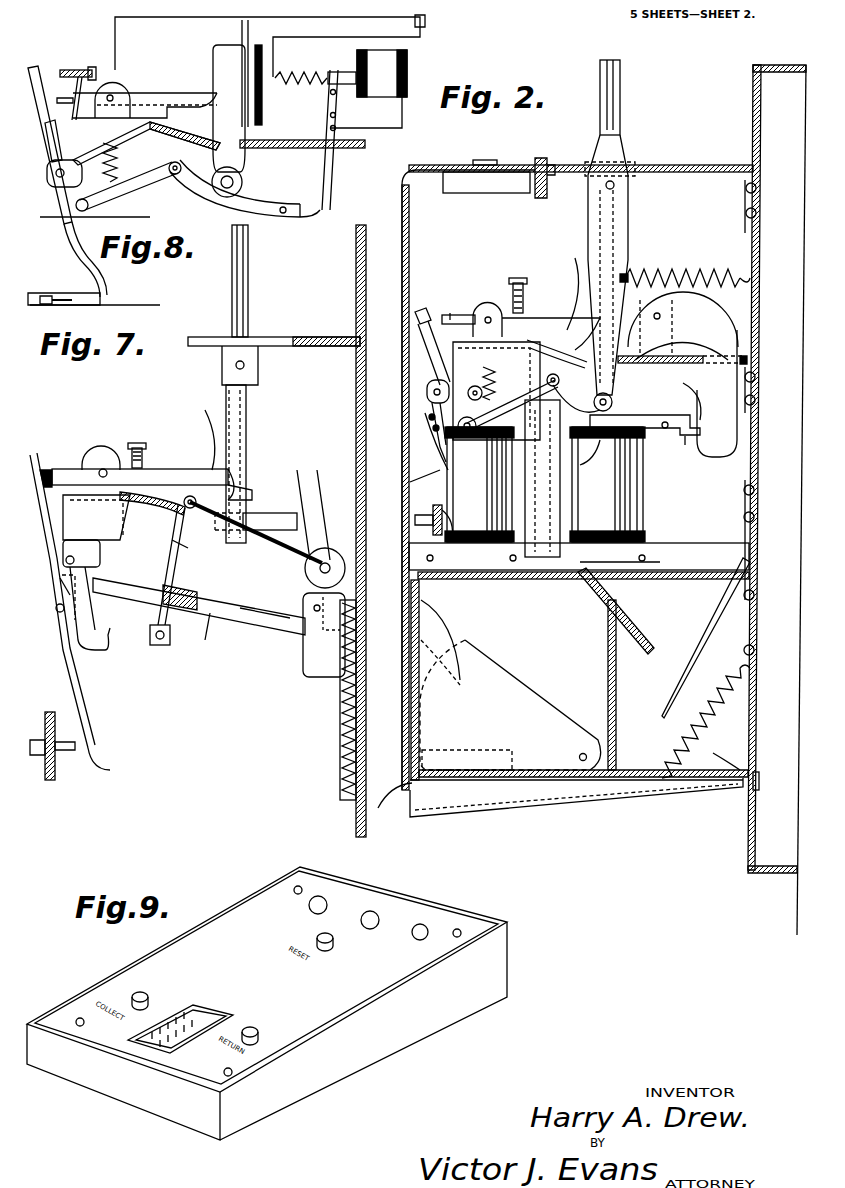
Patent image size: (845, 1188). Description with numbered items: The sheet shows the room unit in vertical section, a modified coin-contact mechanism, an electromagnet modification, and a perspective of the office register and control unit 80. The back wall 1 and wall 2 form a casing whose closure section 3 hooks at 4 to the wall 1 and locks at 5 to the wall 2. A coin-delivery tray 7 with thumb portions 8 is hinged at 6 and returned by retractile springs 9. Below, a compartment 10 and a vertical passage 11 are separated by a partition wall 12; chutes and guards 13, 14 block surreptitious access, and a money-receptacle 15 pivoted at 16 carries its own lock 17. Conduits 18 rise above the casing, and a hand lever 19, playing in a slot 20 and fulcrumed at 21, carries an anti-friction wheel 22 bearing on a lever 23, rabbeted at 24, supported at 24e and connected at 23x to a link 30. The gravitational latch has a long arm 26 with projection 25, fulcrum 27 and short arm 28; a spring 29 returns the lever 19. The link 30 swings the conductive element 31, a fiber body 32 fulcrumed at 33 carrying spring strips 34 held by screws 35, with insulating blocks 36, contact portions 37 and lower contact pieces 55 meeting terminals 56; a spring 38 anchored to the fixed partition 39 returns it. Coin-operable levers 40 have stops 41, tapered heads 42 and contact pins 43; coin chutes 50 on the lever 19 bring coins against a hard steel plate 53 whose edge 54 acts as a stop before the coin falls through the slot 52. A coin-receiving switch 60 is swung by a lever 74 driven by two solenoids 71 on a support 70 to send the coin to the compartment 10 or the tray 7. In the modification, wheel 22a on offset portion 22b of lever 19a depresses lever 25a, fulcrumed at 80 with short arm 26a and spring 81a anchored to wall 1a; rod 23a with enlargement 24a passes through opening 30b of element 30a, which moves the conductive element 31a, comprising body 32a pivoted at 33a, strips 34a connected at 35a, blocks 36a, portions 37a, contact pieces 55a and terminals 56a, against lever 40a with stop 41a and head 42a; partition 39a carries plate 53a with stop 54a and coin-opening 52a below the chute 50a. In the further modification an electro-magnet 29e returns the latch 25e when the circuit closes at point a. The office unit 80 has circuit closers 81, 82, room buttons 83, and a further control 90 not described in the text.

In FIG. 2, the back wall 1 is at (760, 262).
In FIG. 7, the casing wall 1a is at (366, 275).
In FIG. 2, the wall 2 is at (705, 165).
In FIG. 2, the closure section 3 is at (438, 440).
In FIG. 2, the hooked connection 4 is at (765, 779).
In FIG. 2, the lock 5 is at (500, 180).
In FIG. 2, the hinge 6 is at (724, 754).
In FIG. 8, the coin-delivery tray 7 is at (262, 110).
In FIG. 2, the coin-delivery tray 7 is at (550, 800).
In FIG. 2, the thumb portions 8 is at (395, 799).
In FIG. 2, the retractile springs 9 is at (690, 738).
In FIG. 2, the compartment 10 is at (474, 642).
In FIG. 2, the vertical passage 11 is at (633, 585).
In FIG. 2, the transverse partition wall 12 is at (616, 690).
In FIG. 2, the combined chute and guard 13 is at (630, 625).
In FIG. 2, the combined chute and guard 14 is at (705, 632).
In FIG. 2, the money-receptacle 15 is at (525, 700).
In FIG. 2, the pivot 16 is at (578, 755).
In FIG. 2, the individual lock 17 is at (495, 750).
In FIG. 7, the upright-receiving conduits 18 is at (248, 280).
In FIG. 2, the upright-receiving conduits 18 is at (620, 80).
In FIG. 2, the hand lever 19 is at (613, 104).
In FIG. 7, the lever 19a is at (258, 368).
In FIG. 7, the slot 20 is at (255, 336).
In FIG. 2, the slot 20 is at (625, 170).
In FIG. 2, the fulcrum 21 is at (612, 181).
In FIG. 2, the anti-friction wheel 22 is at (612, 405).
In FIG. 7, the anti-friction wheel 22a is at (275, 590).
In FIG. 7, the offset portion 22b is at (297, 495).
In FIG. 2, the vertically swinging lever 23 is at (650, 415).
In FIG. 7, the rod 23a is at (190, 543).
In FIG. 2, the pivotal connection 23x is at (593, 452).
In FIG. 2, the rabbet 24 is at (684, 452).
In FIG. 7, the enlargement 24a is at (150, 628).
In FIG. 2, the pivotal support 24e is at (665, 428).
In FIG. 2, the projection 25 is at (684, 392).
In FIG. 7, the vertically swinging lever 25a is at (240, 622).
In FIG. 8, the latch 25e is at (327, 182).
In FIG. 2, the long arm 26 is at (725, 457).
In FIG. 7, the short arm 26a is at (335, 548).
In FIG. 2, the fulcrum 27 is at (660, 316).
In FIG. 2, the short arm 28 is at (630, 288).
In FIG. 2, the retractile spring 29 is at (668, 270).
In FIG. 8, the electro-magnet 29e is at (407, 62).
In FIG. 2, the link 30 is at (498, 410).
In FIG. 7, the vertically swinging element 30a is at (205, 642).
In FIG. 7, the opening 30b is at (186, 565).
In FIG. 2, the swinging conductive element 31 is at (428, 418).
In FIG. 7, the swinging conductive element 31a is at (47, 589).
In FIG. 2, the body 32 is at (425, 350).
In FIG. 7, the body 32a is at (100, 650).
In FIG. 2, the fulcrum 33 is at (427, 393).
In FIG. 7, the pivot 33a is at (66, 560).
In FIG. 2, the metallic strips 34 is at (409, 481).
In FIG. 7, the spring strips 34a is at (95, 638).
In FIG. 2, the screws 35 is at (423, 423).
In FIG. 7, the connection 35a is at (58, 612).
In FIG. 2, the insulating blocks 36 is at (422, 308).
In FIG. 7, the insulating blocks 36a is at (33, 455).
In FIG. 2, the contact-making portions 37 is at (418, 335).
In FIG. 7, the contact portions 37a is at (50, 470).
In FIG. 2, the retractile spring 38 is at (476, 376).
In FIG. 2, the fixed partition 39 is at (752, 352).
In FIG. 7, the fixed partition 39a is at (165, 508).
In FIG. 2, the coin-operable circuit-completing levers 40 is at (455, 310).
In FIG. 7, the circuit-making and breaking lever 40a is at (172, 468).
In FIG. 2, the adjustable stop 41 is at (513, 292).
In FIG. 7, the adjustable stop 41a is at (138, 443).
In FIG. 2, the tapered head 42 is at (569, 286).
In FIG. 7, the rear head 42a is at (205, 410).
In FIG. 2, the contact-making pin 43 is at (444, 310).
In FIG. 2, the coin chutes 50 is at (628, 240).
In FIG. 7, the chute 50a is at (246, 445).
In FIG. 2, the slot 52 is at (565, 345).
In FIG. 7, the coin-opening 52a is at (120, 545).
In FIG. 2, the hard steel plate 53 is at (680, 355).
In FIG. 7, the hard steel plate 53a is at (256, 530).
In FIG. 2, the forward edge 54 is at (560, 335).
In FIG. 7, the stop portion 54a is at (248, 489).
In FIG. 2, the contact piece 55 is at (470, 480).
In FIG. 7, the contact pieces 55a is at (109, 760).
In FIG. 2, the terminal 56 is at (436, 505).
In FIG. 7, the terminals 56a is at (72, 752).
In FIG. 2, the coin-receiving switch 60 is at (560, 515).
In FIG. 2, the support 70 is at (503, 578).
In FIG. 2, the solenoids 71 is at (637, 488).
In FIG. 2, the lever 74 is at (563, 375).
In FIG. 7, the register and control unit 80 is at (314, 612).
In FIG. 9, the register and control unit 80 is at (415, 1035).
In FIG. 9, the circuit closer 81 is at (135, 990).
In FIG. 7, the retractile spring 81a is at (340, 737).
In FIG. 9, the circuit closer 82 is at (258, 1030).
In FIG. 9, the button 83 is at (190, 1020).
In FIG. 9, the reset button 90 is at (333, 942).
In FIG. 8, the contact point a is at (60, 293).